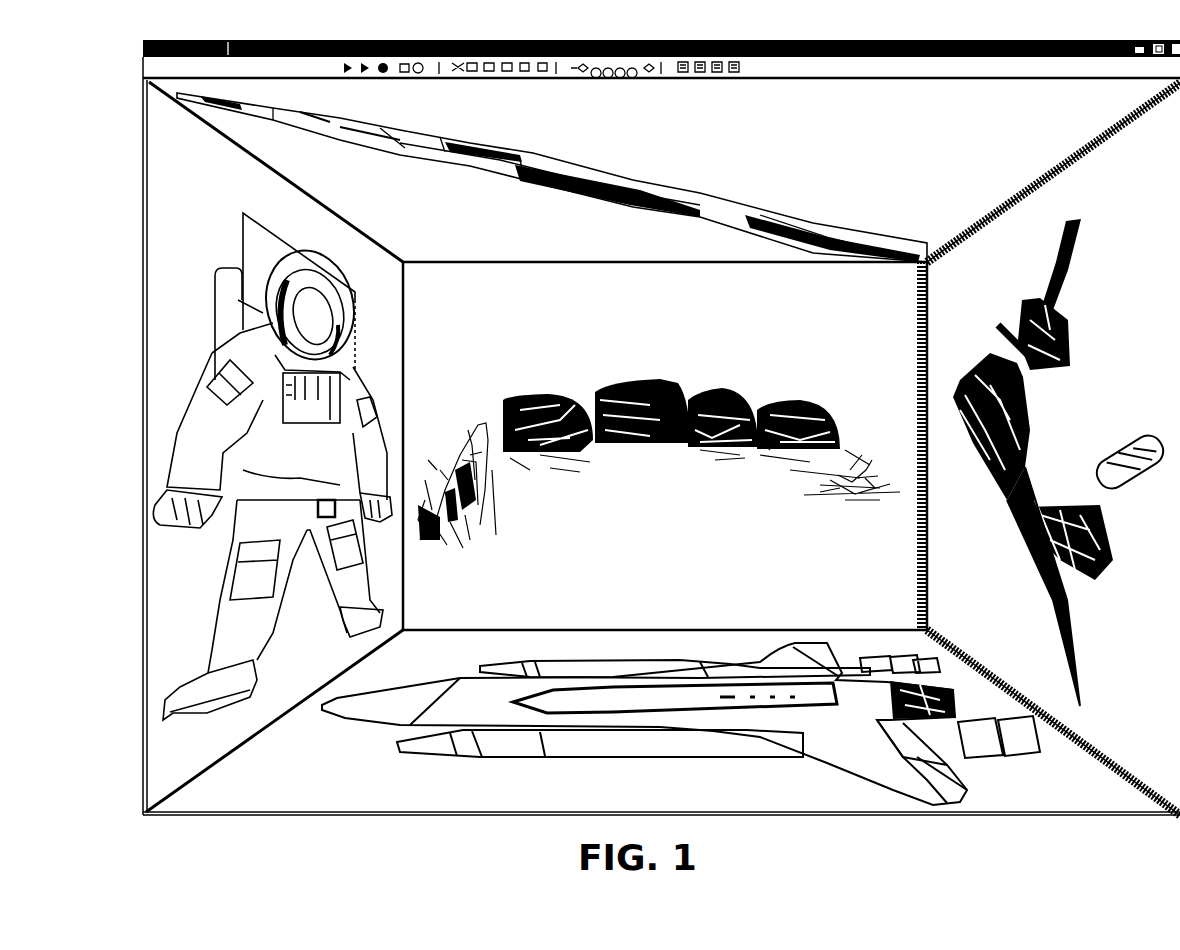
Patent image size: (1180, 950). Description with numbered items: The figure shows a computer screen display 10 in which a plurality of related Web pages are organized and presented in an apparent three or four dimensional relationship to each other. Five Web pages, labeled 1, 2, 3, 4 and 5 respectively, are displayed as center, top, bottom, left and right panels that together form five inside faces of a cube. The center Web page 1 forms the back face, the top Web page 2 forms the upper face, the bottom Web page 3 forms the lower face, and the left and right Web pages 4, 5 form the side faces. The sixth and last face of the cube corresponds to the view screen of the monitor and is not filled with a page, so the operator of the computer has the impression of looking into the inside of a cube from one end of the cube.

The cubic display window 10 is at (386, 815).
The Web page 1 is at (650, 385).
The Web page 2 is at (552, 170).
The Web page 3 is at (681, 731).
The Web page 4 is at (272, 466).
The Web page 5 is at (1060, 462).